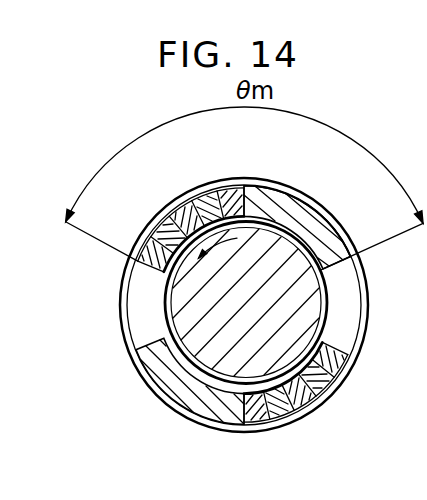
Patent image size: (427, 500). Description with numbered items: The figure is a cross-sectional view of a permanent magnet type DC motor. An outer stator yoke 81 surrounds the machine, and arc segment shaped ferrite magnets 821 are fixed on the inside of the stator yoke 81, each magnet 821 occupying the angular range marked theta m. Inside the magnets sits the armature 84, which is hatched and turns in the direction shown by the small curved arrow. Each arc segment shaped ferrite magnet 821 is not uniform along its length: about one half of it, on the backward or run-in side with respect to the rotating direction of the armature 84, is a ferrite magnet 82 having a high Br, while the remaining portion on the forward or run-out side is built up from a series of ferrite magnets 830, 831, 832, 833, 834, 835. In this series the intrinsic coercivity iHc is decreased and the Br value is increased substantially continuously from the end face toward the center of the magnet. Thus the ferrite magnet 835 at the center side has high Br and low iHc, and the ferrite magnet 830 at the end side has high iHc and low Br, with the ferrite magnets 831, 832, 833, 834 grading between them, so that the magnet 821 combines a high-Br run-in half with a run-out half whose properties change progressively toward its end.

The stator yoke 81 is at (367, 317).
The ferrite magnet 82 is at (333, 242).
The arc segment shaped ferrite magnet 821 is at (295, 197).
The armature 84 is at (176, 312).
The ferrite magnet 830 is at (137, 262).
The ferrite magnet 831 is at (150, 228).
The ferrite magnet 832 is at (175, 210).
The ferrite magnet 833 is at (187, 197).
The ferrite magnet 834 is at (213, 198).
The ferrite magnet 835 is at (233, 195).